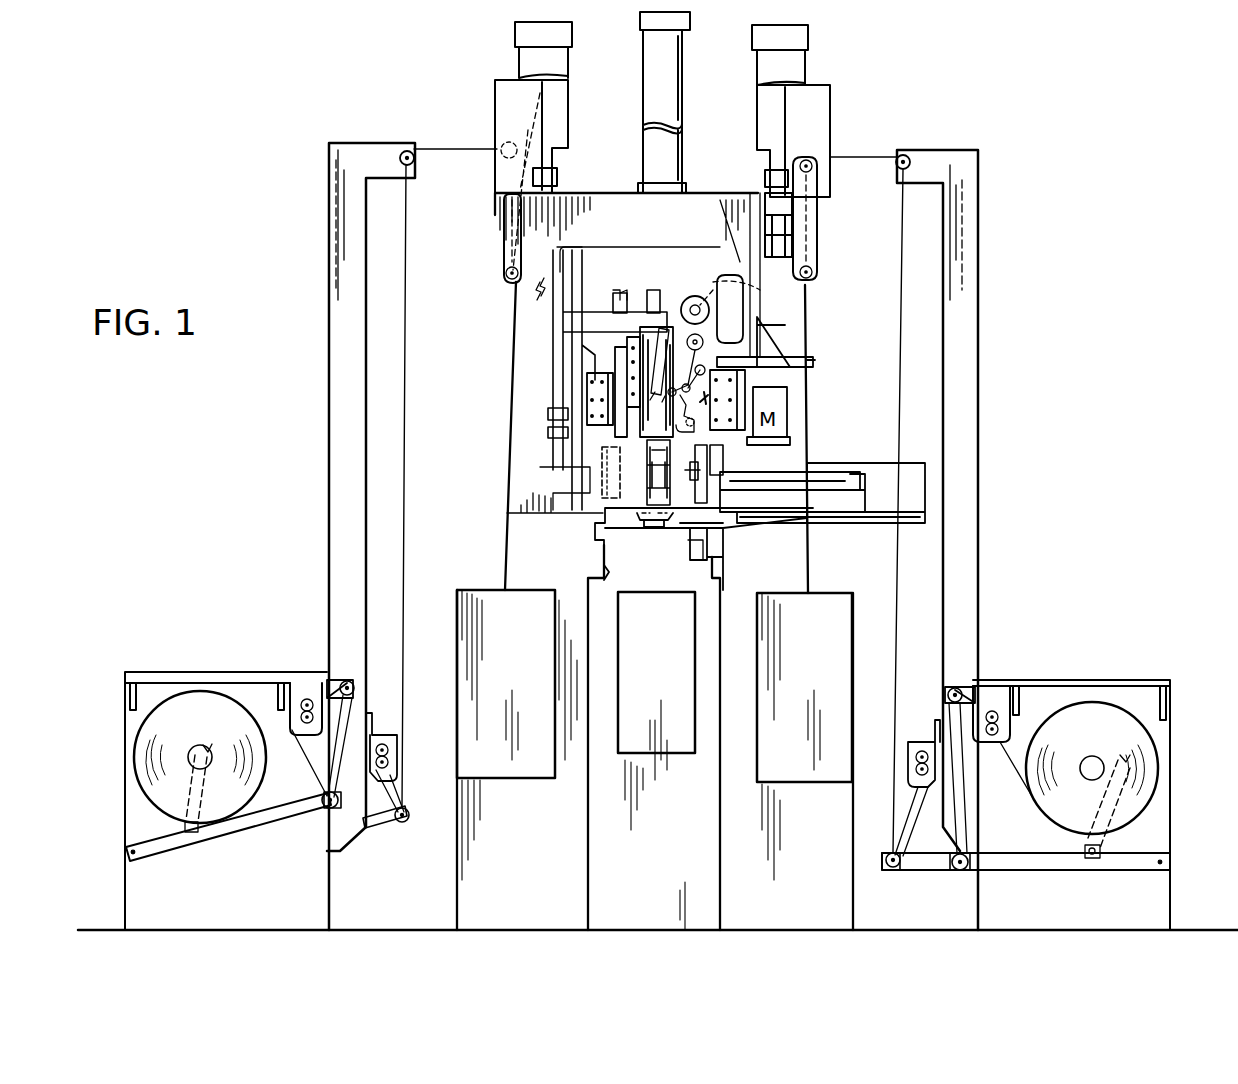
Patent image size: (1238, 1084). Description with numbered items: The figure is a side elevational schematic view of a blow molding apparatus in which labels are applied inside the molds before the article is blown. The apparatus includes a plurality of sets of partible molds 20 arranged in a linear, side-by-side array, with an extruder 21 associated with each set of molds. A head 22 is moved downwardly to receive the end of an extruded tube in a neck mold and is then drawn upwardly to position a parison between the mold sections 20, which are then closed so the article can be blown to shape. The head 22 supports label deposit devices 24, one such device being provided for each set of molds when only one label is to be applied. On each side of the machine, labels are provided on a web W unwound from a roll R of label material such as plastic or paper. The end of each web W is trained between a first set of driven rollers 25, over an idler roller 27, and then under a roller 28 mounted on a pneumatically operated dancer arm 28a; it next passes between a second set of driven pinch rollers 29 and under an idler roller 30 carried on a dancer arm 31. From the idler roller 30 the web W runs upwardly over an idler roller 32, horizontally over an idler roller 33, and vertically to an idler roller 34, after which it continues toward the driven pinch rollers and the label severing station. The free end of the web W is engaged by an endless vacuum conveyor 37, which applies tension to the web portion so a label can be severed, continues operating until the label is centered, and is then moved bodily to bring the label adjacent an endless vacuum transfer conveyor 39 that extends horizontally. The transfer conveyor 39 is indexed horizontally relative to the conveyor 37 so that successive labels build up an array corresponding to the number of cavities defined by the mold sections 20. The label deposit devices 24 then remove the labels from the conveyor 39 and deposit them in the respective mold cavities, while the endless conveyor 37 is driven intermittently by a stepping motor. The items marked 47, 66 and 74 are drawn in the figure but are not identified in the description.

The partible molds 20 is at (608, 492).
The extruder 21 is at (666, 660).
The head 22 is at (655, 415).
The label deposit devices 24 is at (600, 398).
The first set of driven rollers 25 is at (305, 698).
The idler roller 27 is at (345, 682).
The roller 28 is at (325, 797).
The dancer arm 28a is at (258, 816).
The second set of driven pinch rollers 29 is at (921, 750).
The idler roller 30 is at (408, 822).
The dancer arm 31 is at (376, 822).
The idler roller 32 is at (407, 150).
The idler roller 33 is at (515, 150).
The idler roller 34 is at (505, 283).
The endless vacuum conveyor 37 is at (762, 360).
The endless vacuum transfer conveyor 39 is at (590, 378).
The drive pulley 47 is at (698, 300).
The switch 66 is at (648, 338).
The linkage 74 is at (702, 388).
The web W is at (404, 596).
The roll R is at (208, 732).